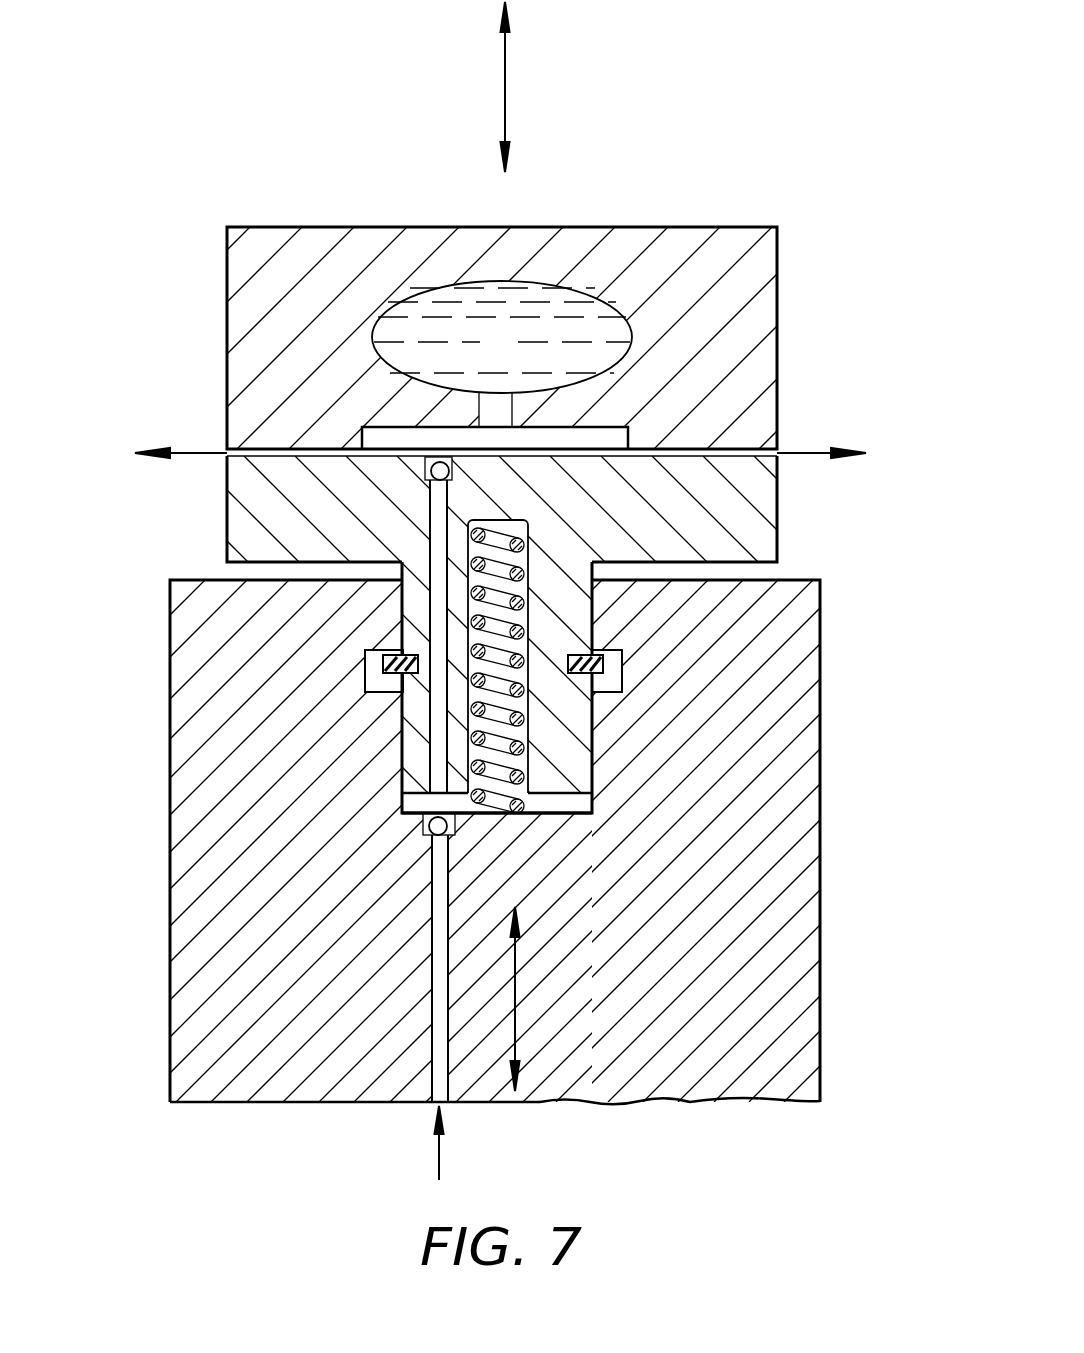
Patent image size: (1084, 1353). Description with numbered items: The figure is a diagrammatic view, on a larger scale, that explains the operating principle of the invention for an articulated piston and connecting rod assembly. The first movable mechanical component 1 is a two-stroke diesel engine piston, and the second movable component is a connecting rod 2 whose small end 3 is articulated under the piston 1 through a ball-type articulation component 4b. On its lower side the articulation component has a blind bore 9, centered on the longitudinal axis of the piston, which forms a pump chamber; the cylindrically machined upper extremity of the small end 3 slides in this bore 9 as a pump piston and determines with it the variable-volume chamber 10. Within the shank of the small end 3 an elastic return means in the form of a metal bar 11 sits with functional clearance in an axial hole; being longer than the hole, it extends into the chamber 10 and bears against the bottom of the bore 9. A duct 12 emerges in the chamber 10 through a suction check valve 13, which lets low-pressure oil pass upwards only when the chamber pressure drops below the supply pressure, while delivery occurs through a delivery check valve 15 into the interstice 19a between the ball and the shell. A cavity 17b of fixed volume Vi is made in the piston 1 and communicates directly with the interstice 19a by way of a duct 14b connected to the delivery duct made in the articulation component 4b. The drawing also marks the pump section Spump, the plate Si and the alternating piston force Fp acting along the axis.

The first movable mechanical component 1 is at (262, 300).
The connecting rod 2 is at (190, 1022).
The small end 3 is at (415, 745).
The articulation component 4b is at (285, 478).
The blind bore 9 is at (400, 592).
The chamber 10 is at (445, 802).
The metal bar 11 is at (470, 678).
The duct 12 is at (438, 1019).
The suction check valve 13 is at (423, 832).
The duct 14b is at (478, 400).
The delivery check valve 15 is at (432, 470).
The cavity 17b is at (465, 312).
The interstice 19a is at (357, 437).
The fixed volume Vi is at (497, 338).
The insert plate Si is at (598, 437).
The pump chamber Spump is at (565, 788).
The pressing force Fp is at (518, 591).